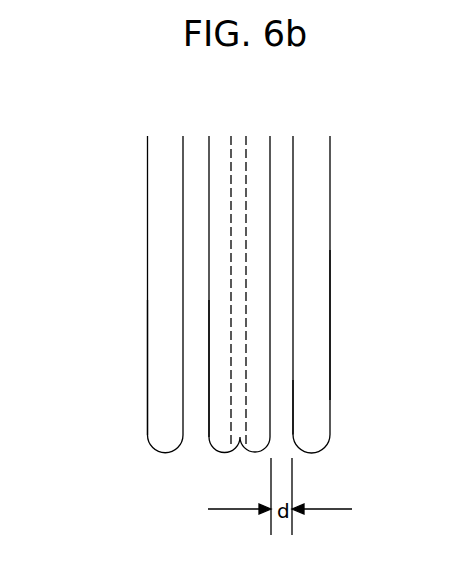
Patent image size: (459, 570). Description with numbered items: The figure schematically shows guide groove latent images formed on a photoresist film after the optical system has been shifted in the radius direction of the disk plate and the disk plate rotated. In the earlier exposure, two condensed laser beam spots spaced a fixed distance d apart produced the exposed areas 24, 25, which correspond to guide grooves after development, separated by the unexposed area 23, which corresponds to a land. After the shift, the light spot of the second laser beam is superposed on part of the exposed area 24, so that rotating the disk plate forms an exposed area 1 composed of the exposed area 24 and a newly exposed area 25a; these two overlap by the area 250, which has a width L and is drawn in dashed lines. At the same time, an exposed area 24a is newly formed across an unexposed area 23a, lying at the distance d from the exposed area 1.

The exposed area 1 is at (275, 125).
The overlap area 250 is at (242, 152).
The unexposed area 23 is at (193, 218).
The exposed area 25 is at (160, 277).
The exposed area 24 is at (220, 435).
The unexposed area 23a is at (280, 238).
The exposed area 24a is at (308, 308).
The newly exposed area 25a is at (263, 415).